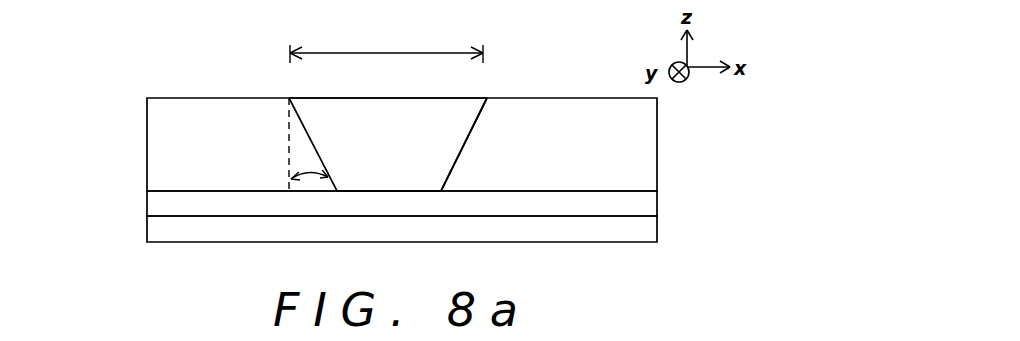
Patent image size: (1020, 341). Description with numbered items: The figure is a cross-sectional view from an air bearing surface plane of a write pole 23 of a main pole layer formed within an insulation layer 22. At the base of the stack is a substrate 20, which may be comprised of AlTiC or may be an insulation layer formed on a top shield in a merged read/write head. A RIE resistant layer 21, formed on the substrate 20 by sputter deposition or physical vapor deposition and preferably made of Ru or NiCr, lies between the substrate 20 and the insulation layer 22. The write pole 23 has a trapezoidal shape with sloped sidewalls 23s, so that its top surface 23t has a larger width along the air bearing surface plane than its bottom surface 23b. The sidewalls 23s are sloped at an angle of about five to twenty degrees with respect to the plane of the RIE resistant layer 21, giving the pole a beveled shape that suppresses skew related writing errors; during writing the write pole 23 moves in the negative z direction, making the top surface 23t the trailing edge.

The substrate 20 is at (158, 228).
The RIE resistant layer 21 is at (647, 205).
The insulation layer 22 is at (158, 182).
The write pole 23 is at (450, 117).
The top surface 23t is at (289, 98).
The bottom surface 23b is at (337, 191).
The sloped sidewalls 23s is at (465, 143).